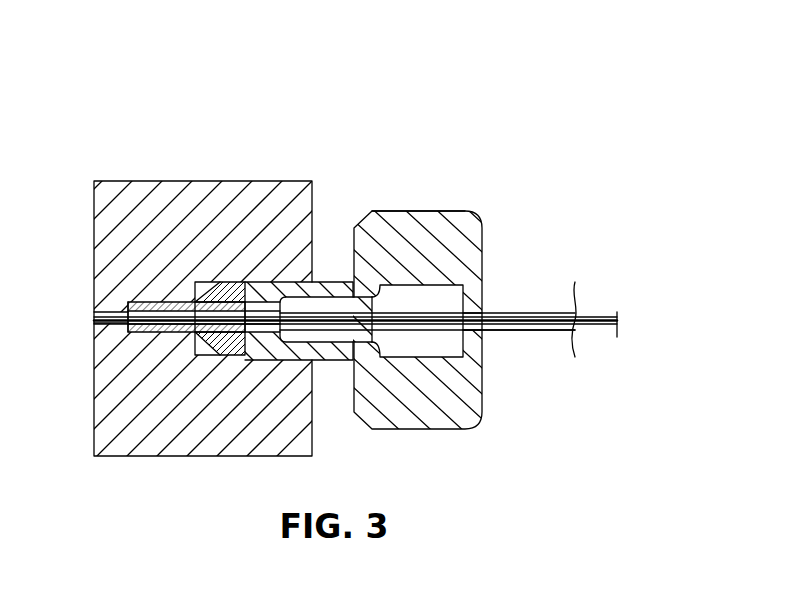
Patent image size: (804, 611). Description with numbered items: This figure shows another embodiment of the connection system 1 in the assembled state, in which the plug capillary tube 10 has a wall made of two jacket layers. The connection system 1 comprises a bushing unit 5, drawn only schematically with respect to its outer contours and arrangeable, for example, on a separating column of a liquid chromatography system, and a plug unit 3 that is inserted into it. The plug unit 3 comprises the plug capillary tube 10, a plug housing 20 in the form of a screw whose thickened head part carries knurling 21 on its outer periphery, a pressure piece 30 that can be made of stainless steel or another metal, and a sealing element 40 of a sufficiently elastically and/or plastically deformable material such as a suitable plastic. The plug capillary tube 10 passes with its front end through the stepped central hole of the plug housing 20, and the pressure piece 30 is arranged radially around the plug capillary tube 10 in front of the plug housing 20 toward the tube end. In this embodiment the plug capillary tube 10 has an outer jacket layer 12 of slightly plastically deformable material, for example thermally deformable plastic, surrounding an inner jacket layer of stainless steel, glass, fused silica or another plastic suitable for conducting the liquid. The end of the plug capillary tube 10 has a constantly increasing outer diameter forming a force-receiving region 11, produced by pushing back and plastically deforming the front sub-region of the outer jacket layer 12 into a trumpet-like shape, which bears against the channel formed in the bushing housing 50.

The connection system 1 is at (578, 393).
The plug unit 3 is at (493, 438).
The bushing unit 5 is at (162, 478).
The plug capillary tube 10 is at (522, 313).
The force-receiving region 11 is at (128, 312).
The outer jacket layer 12 is at (531, 332).
The plug housing 20 is at (465, 257).
The knurling 21 is at (443, 208).
The pressure piece 30 is at (160, 310).
The sealing element 40 is at (139, 331).
The bushing housing 50 is at (253, 192).